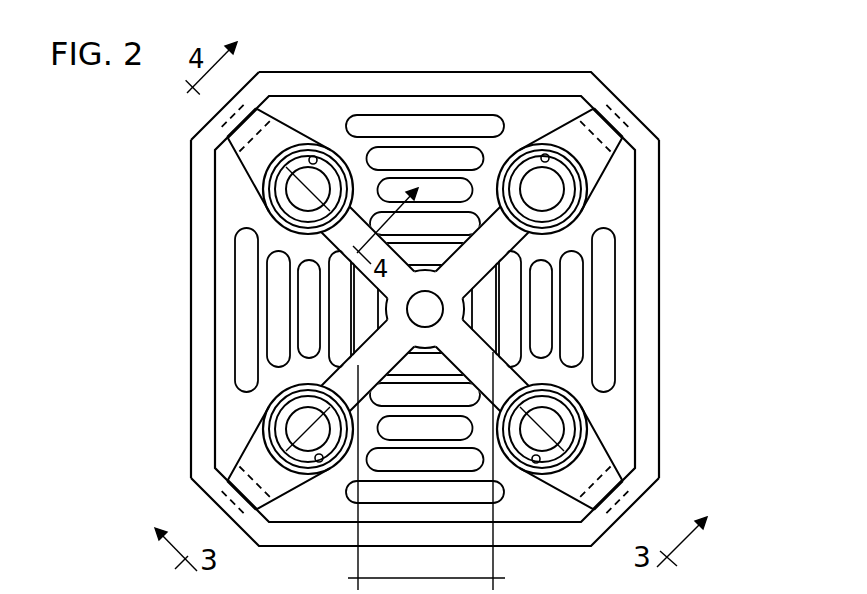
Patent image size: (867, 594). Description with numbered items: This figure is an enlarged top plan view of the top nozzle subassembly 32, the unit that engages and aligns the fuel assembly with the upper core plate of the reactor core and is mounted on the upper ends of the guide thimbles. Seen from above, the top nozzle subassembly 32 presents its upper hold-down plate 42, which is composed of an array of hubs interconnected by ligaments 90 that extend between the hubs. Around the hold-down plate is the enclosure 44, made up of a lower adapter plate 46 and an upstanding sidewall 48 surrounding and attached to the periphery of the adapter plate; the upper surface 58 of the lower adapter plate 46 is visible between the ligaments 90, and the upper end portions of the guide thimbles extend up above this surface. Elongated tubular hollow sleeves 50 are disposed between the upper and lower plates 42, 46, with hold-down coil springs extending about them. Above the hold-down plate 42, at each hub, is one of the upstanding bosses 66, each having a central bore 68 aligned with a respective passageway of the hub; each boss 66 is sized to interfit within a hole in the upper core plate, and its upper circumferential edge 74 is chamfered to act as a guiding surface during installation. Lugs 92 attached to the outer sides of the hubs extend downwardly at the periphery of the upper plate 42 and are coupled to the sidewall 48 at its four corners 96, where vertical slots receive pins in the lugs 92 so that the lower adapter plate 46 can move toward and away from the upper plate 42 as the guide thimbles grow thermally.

The top nozzle subassembly 32 is at (670, 142).
The upper hold-down plate 42 is at (589, 422).
The enclosure 44 is at (191, 303).
The lower adapter plate 46 is at (240, 413).
The upstanding sidewall 48 is at (660, 303).
The elongated tubular hollow sleeves 50 is at (290, 190).
The upper surface 58 is at (626, 211).
The upstanding bosses 66 is at (552, 142).
The central bores 68 is at (322, 158).
The upper circumferential edge 74 is at (290, 158).
The ligaments 90 is at (360, 206).
The lugs 92 is at (587, 120).
The corners 96 is at (212, 128).